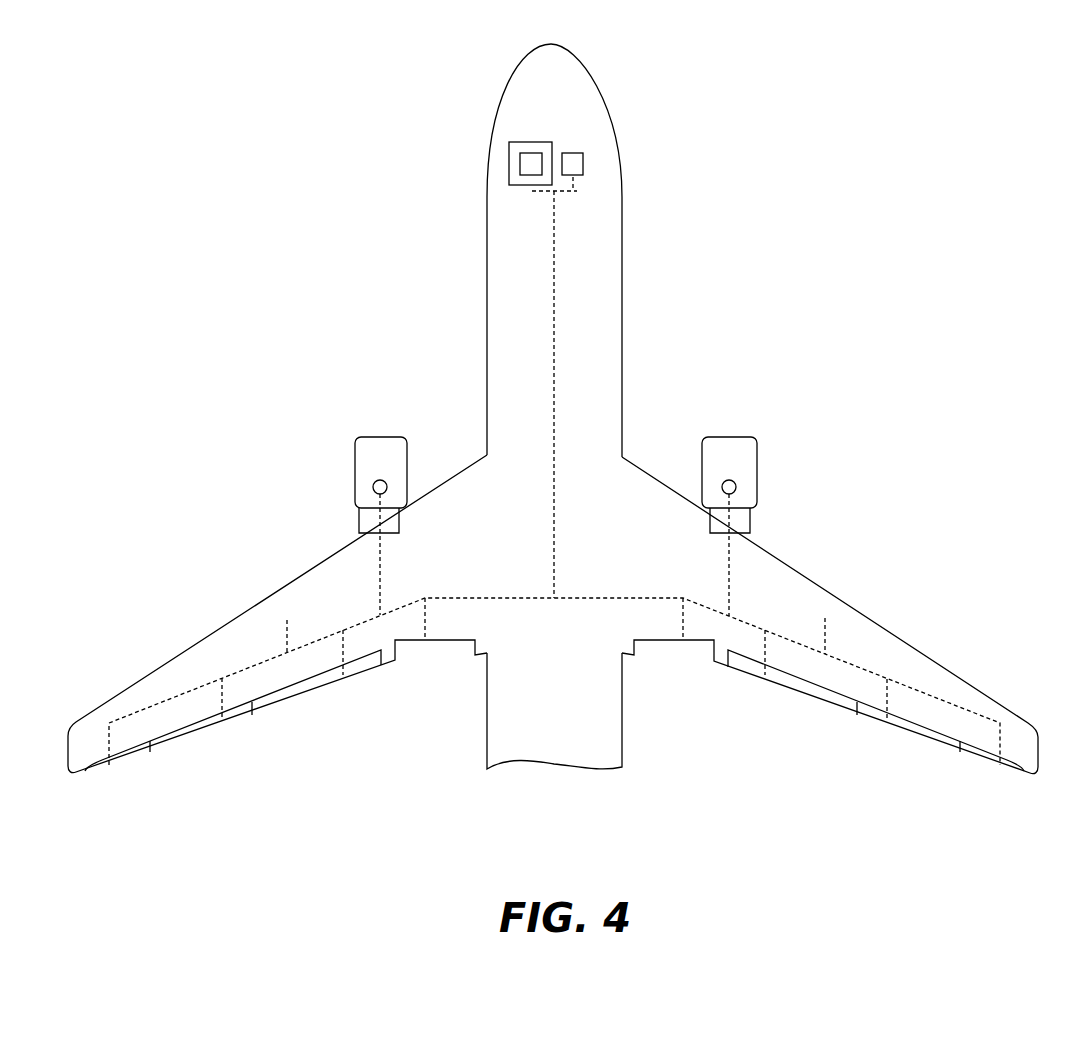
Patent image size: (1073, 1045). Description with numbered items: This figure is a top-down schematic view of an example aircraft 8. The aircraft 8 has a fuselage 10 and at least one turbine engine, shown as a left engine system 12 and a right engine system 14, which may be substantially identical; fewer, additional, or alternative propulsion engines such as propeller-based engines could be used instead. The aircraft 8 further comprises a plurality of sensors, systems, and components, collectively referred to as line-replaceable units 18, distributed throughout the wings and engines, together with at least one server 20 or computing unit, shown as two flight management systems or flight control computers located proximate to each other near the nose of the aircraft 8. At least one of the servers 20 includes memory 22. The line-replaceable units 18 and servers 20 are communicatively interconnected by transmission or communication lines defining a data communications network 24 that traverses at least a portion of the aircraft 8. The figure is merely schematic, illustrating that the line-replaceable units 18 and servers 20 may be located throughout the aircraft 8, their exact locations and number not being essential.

The aircraft 8 is at (378, 72).
The fuselage 10 is at (624, 339).
The left engine system 12 is at (380, 437).
The right engine system 14 is at (740, 448).
The line-replaceable units 18 is at (388, 484).
The server 20 is at (509, 166).
The memory 22 is at (528, 152).
The data communications network 24 is at (553, 338).